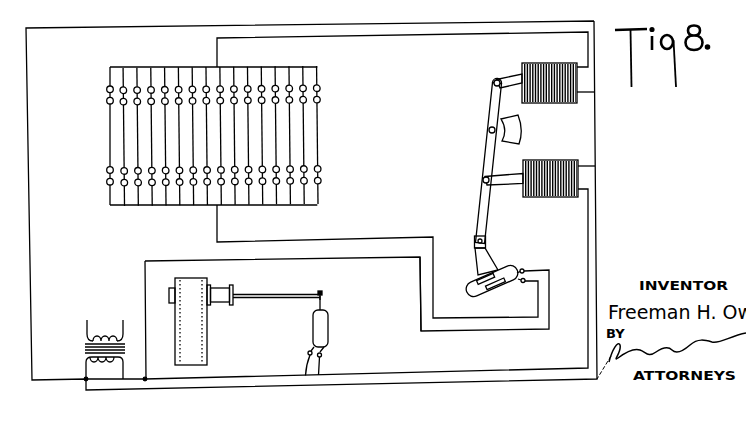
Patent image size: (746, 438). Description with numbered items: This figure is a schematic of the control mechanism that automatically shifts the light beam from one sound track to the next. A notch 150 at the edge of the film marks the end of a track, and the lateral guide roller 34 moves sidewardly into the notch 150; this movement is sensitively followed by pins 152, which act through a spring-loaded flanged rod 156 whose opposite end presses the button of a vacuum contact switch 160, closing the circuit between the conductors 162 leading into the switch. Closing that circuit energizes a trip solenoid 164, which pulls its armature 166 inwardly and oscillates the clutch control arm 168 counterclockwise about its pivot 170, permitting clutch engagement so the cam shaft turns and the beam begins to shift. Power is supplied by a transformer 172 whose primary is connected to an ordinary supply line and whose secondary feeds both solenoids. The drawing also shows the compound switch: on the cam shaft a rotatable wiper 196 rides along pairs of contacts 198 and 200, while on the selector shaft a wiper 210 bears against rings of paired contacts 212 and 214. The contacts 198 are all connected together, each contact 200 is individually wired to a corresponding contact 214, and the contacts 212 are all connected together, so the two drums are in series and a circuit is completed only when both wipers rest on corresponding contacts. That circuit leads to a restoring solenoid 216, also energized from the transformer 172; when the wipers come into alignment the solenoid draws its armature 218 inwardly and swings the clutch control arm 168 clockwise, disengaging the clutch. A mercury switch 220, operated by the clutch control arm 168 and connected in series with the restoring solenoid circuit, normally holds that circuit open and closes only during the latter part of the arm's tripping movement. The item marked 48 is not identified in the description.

The lateral guide roller 34 is at (190, 300).
The coupling 48 is at (208, 288).
The notch 150 is at (205, 343).
The pins 152 is at (223, 304).
The rod 156 is at (270, 294).
The vacuum contact switch 160 is at (328, 326).
The conductors 162 is at (311, 363).
The trip solenoid 164 is at (553, 160).
The armature 166 is at (506, 186).
The clutch control arm 168 is at (487, 154).
The pivot 170 is at (489, 130).
The transformer 172 is at (85, 349).
The wiper 196 is at (180, 98).
The contacts 198 is at (107, 88).
The contacts 200 is at (107, 101).
The wiper 210 is at (172, 205).
The contacts 212 is at (107, 183).
The contacts 214 is at (107, 170).
The restoring solenoid 216 is at (545, 63).
The armature 218 is at (508, 78).
The mercury switch 220 is at (500, 268).